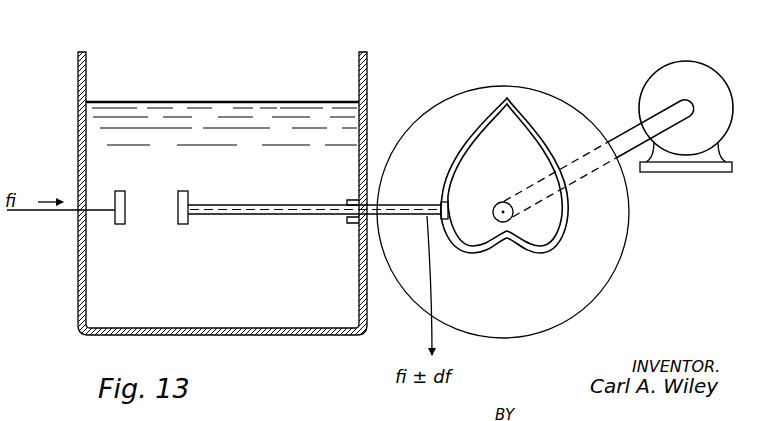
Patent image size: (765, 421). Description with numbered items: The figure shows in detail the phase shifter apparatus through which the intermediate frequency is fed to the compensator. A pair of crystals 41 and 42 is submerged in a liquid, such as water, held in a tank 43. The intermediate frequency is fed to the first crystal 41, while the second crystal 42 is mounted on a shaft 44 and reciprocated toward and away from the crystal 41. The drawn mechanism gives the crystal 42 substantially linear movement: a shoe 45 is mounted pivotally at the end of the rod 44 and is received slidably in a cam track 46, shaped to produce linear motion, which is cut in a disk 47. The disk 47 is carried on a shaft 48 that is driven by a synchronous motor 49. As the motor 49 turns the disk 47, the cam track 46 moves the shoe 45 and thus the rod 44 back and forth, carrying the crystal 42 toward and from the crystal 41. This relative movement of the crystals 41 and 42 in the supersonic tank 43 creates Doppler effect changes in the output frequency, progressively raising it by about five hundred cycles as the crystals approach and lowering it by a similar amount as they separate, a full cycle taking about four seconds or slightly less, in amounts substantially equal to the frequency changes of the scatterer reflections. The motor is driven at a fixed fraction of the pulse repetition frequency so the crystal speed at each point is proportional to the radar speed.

The crystal 41 is at (120, 226).
The crystal 42 is at (183, 226).
The tank 43 is at (78, 95).
The shaft 44 is at (287, 216).
The shoe 45 is at (447, 196).
The cam track 46 is at (565, 215).
The disk 47 is at (629, 243).
The shaft 48 is at (622, 129).
The motor 49 is at (672, 61).